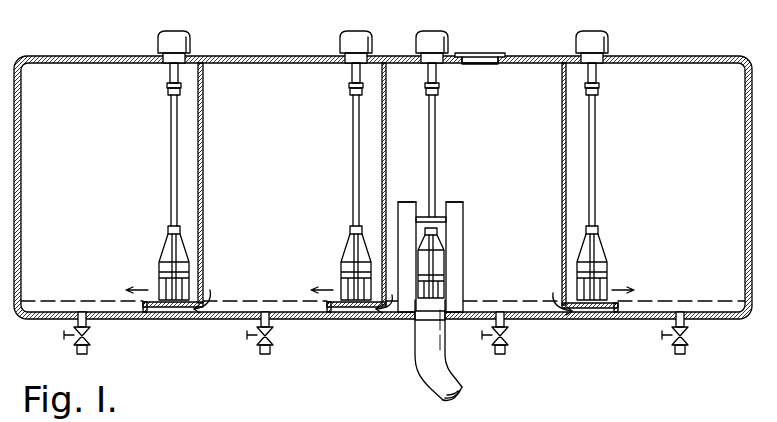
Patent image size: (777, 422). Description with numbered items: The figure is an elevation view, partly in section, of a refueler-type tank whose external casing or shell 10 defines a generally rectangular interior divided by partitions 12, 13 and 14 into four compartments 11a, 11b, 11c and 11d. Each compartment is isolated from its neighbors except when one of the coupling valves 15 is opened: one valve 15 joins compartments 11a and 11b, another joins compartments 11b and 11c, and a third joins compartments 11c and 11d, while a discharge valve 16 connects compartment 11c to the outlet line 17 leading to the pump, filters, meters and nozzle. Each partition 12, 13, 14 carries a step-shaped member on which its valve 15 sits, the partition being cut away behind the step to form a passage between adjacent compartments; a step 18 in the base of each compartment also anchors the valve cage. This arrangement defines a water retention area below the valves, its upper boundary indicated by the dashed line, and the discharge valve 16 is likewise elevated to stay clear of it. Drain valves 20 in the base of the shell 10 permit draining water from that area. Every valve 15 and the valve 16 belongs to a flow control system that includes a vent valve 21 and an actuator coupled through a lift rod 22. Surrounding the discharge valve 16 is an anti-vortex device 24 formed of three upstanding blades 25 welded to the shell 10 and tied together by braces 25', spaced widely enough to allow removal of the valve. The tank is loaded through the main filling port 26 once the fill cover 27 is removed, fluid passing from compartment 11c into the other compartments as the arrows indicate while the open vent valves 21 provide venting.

The external casing or shell 10 is at (248, 57).
The compartment 11a is at (106, 75).
The compartment 11b is at (286, 75).
The compartment 11c is at (531, 80).
The compartment 11d is at (671, 75).
The partition 12 is at (204, 160).
The partition 13 is at (387, 160).
The partition 14 is at (562, 160).
The coupling valve 15 is at (154, 289).
The discharge valve 16 is at (441, 290).
The outlet line 17 is at (415, 368).
The step 18 is at (176, 313).
The drain valve 20 is at (88, 338).
The vent valve 21 is at (176, 30).
The lift rod 22 is at (170, 168).
The anti-vortex device 24 is at (470, 226).
The upstanding blade 25 is at (442, 239).
The brace 25' is at (436, 194).
The main filling port 26 is at (483, 52).
The fill cover 27 is at (478, 64).